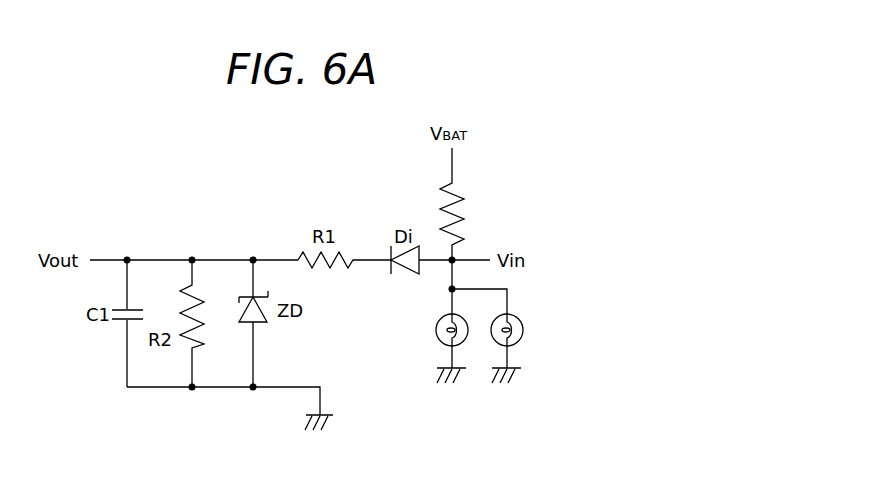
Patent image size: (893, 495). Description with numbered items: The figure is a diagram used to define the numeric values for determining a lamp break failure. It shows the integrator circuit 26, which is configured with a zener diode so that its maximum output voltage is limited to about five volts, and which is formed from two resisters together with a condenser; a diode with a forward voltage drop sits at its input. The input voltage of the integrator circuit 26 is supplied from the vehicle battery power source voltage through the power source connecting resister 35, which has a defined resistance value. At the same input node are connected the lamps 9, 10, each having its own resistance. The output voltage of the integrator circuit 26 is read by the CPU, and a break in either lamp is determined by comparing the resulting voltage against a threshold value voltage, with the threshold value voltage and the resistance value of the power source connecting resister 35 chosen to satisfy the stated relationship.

The integrator circuit 26 is at (346, 213).
The power source connecting resister 35 is at (457, 178).
The lamp 9 is at (437, 318).
The lamp 10 is at (522, 318).